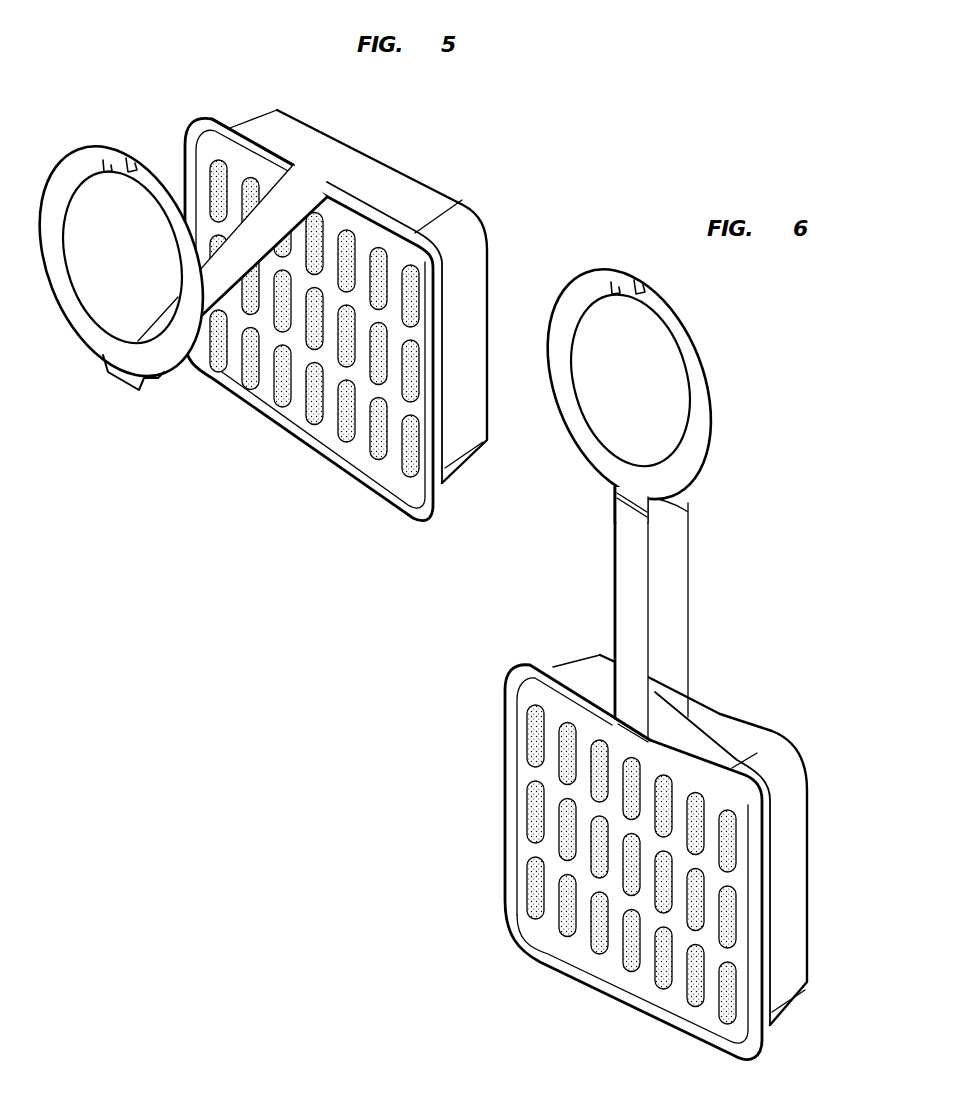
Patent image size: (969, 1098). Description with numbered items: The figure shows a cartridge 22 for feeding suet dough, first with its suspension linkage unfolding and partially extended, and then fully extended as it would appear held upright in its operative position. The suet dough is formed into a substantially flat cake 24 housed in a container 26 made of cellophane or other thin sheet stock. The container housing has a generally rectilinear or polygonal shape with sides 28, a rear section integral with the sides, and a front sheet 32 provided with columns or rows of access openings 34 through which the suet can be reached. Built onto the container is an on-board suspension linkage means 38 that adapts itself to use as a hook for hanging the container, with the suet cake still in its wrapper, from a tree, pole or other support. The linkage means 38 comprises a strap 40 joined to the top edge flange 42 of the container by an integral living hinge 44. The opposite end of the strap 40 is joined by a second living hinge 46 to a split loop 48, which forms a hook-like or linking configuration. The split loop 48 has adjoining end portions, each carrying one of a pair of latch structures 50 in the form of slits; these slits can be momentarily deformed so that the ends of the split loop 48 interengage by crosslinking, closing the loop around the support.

In FIG. 5, the cartridge 22 is at (397, 151).
In FIG. 6, the cartridge 22 is at (751, 690).
In FIG. 5, the cake 24 is at (372, 252).
In FIG. 6, the cake 24 is at (643, 851).
In FIG. 5, the container 26 is at (457, 338).
In FIG. 5, the sides 28 is at (307, 138).
In FIG. 5, the front sheet 32 is at (303, 433).
In FIG. 6, the front sheet 32 is at (582, 957).
In FIG. 5, the access openings 34 is at (413, 392).
In FIG. 6, the access openings 34 is at (530, 740).
In FIG. 6, the suspension linkage means 38 is at (672, 500).
In FIG. 5, the strap 40 is at (292, 230).
In FIG. 6, the strap 40 is at (633, 571).
In FIG. 5, the top edge flange 42 is at (230, 127).
In FIG. 6, the top edge flange 42 is at (585, 697).
In FIG. 5, the living hinge 44 is at (316, 184).
In FIG. 6, the living hinge 44 is at (690, 722).
In FIG. 5, the second living hinge 46 is at (128, 385).
In FIG. 6, the second living hinge 46 is at (630, 507).
In FIG. 5, the split loop 48 is at (75, 375).
In FIG. 6, the split loop 48 is at (718, 337).
In FIG. 5, the latch structures 50 is at (124, 150).
In FIG. 6, the latch structures 50 is at (638, 266).